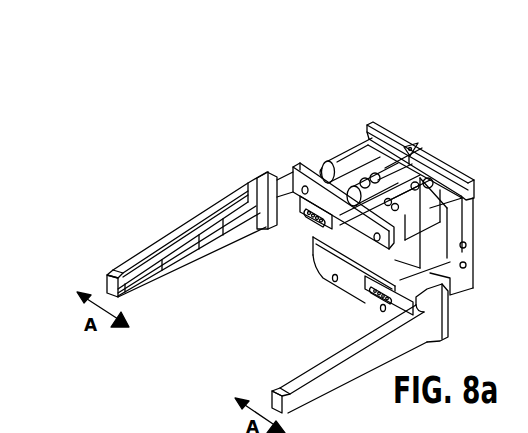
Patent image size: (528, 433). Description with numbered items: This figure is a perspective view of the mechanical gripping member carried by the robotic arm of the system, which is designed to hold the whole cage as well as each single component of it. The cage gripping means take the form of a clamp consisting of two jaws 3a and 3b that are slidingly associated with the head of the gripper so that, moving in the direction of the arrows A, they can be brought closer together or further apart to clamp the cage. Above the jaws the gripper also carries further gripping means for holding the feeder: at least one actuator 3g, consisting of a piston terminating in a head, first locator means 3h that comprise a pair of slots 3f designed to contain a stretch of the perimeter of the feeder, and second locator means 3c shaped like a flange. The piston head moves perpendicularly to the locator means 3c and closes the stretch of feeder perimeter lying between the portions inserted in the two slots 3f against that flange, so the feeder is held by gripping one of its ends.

The jaw 3a is at (323, 386).
The jaw 3b is at (190, 233).
The second locator means 3c is at (284, 170).
The slots 3f is at (320, 166).
The actuator 3g is at (409, 146).
The first locator means 3h is at (350, 153).